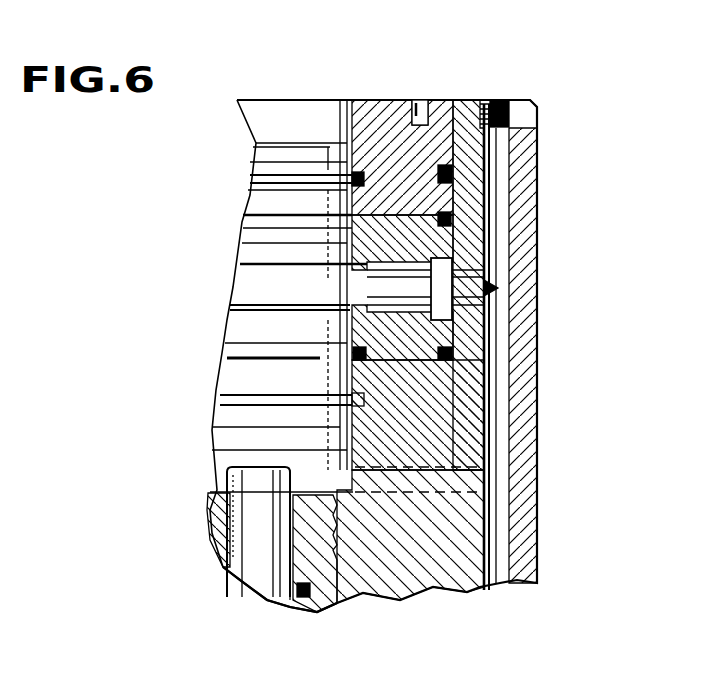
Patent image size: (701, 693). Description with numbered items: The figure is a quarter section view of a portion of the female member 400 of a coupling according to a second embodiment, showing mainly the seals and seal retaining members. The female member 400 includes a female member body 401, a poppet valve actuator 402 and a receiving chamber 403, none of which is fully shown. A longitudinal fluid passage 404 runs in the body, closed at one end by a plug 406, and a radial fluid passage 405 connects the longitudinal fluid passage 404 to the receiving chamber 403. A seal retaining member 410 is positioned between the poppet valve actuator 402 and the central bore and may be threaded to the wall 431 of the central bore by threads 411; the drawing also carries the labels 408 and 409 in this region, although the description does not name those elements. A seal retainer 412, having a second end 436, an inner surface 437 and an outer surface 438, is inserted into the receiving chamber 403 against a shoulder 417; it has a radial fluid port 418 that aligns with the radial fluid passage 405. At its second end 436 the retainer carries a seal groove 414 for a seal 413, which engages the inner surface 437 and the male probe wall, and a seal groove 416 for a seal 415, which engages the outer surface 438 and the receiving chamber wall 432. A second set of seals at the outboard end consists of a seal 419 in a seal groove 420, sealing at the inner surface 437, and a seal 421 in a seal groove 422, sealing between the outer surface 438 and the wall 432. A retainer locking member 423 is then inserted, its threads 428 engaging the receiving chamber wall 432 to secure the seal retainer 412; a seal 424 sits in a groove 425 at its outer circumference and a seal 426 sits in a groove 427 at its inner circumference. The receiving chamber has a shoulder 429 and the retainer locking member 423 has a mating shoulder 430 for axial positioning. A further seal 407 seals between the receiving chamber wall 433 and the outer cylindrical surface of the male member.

The female member 400 is at (568, 424).
The female member body 401 is at (537, 565).
The poppet valve actuator 402 is at (210, 512).
The receiving chamber 403 is at (330, 462).
The longitudinal fluid passage 404 is at (537, 523).
The radial fluid passage 405 is at (492, 290).
The plug 406 is at (495, 100).
The seal 407 is at (350, 400).
The bore 408 is at (537, 452).
The threaded portion 409 is at (537, 502).
The seal retaining member 410 is at (300, 540).
The threads 411 is at (290, 522).
The seal retainer 412 is at (330, 262).
The seal 413 is at (350, 352).
The seal groove 414 is at (340, 328).
The seal 415 is at (497, 400).
The seal groove 416 is at (480, 355).
The shoulder 417 is at (484, 372).
The radial fluid port 418 is at (330, 300).
The seal 419 is at (350, 218).
The seal groove 420 is at (347, 243).
The seal 421 is at (455, 220).
The seal groove 422 is at (537, 228).
The retainer locking member 423 is at (350, 130).
The seal 424 is at (455, 175).
The groove 425 is at (402, 157).
The seal 426 is at (352, 180).
The groove 427 is at (250, 160).
The threads 428 is at (442, 100).
The shoulder 429 is at (537, 142).
The mating shoulder 430 is at (537, 127).
The wall 431 is at (407, 596).
The receiving chamber wall 432 is at (537, 215).
The receiving chamber wall 433 is at (326, 462).
The second end 436 is at (400, 365).
The inner surface 437 is at (330, 288).
The outer surface 438 is at (455, 288).